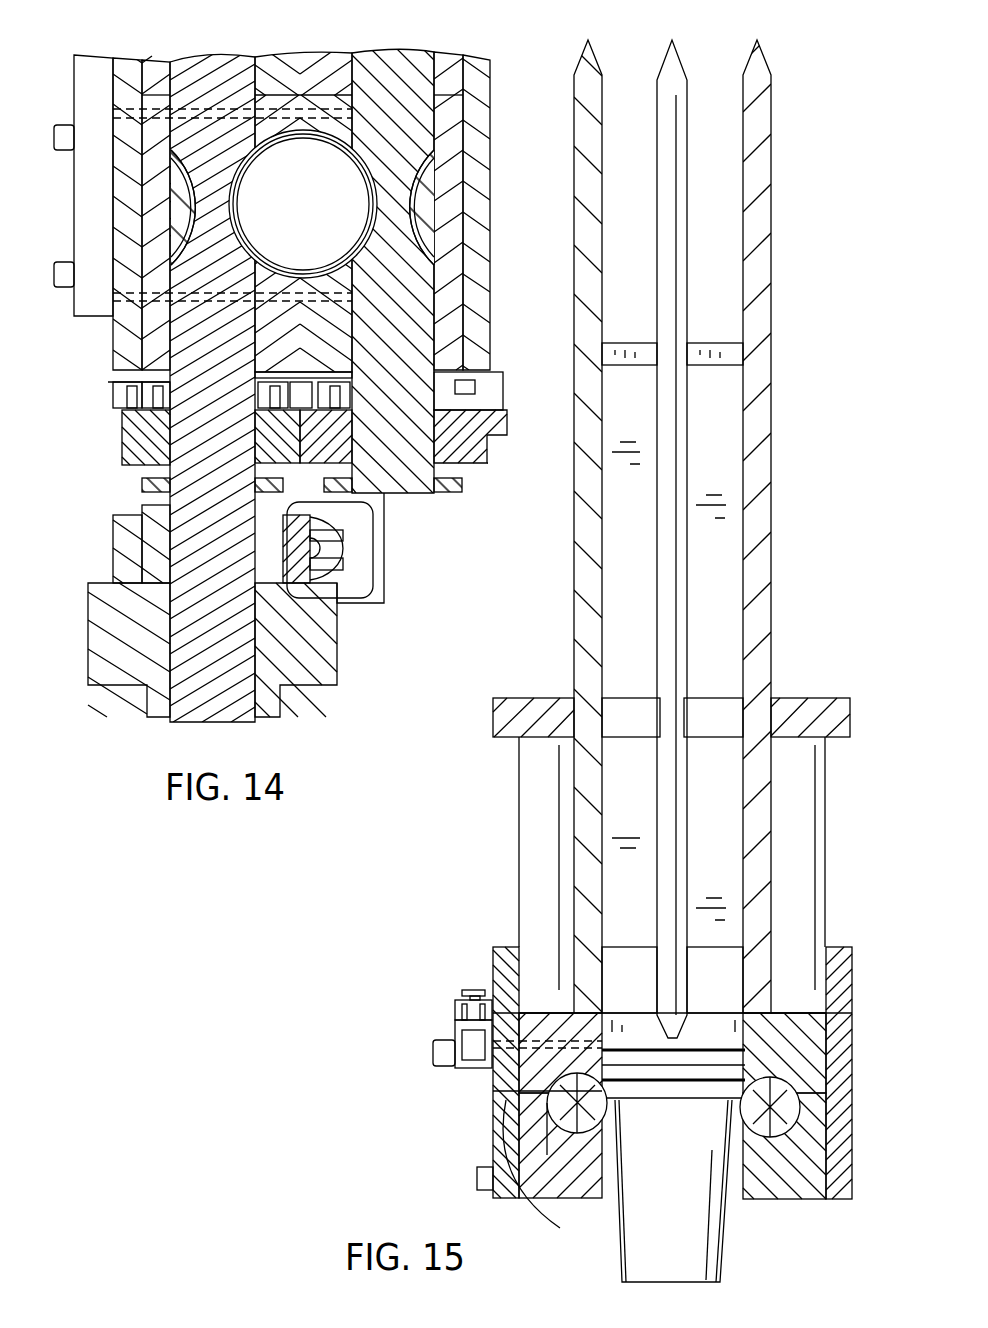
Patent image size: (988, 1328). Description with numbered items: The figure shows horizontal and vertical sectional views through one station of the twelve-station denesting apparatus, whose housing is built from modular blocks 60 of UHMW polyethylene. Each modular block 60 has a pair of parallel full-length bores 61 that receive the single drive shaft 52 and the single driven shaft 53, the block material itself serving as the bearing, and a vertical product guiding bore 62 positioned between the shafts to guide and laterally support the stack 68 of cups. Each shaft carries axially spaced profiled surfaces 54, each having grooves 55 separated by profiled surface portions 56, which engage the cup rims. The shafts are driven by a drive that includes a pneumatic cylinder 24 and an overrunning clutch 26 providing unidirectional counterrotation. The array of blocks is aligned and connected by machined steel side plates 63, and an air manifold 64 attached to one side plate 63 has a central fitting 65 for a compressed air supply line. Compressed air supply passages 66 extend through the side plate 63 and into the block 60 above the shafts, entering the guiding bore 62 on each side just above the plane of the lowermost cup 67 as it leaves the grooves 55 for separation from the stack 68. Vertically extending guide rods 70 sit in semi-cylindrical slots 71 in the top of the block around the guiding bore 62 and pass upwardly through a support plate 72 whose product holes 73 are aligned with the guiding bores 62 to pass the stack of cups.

In FIG. 14, the pneumatic cylinder 24 is at (380, 563).
In FIG. 14, the overrunning clutch 26 is at (330, 640).
In FIG. 14, the drive shaft 52 is at (182, 724).
In FIG. 15, the drive shaft 52 is at (618, 1200).
In FIG. 14, the driven shaft 53 is at (412, 492).
In FIG. 15, the driven shaft 53 is at (770, 1140).
In FIG. 14, the profiled surfaces 54 is at (430, 200).
In FIG. 15, the profiled surfaces 54 is at (828, 1098).
In FIG. 14, the grooves 55 is at (368, 186).
In FIG. 15, the grooves 55 is at (830, 1072).
In FIG. 15, the profiled surface portions 56 is at (552, 1138).
In FIG. 14, the modular block 60 is at (300, 118).
In FIG. 15, the modular block 60 is at (826, 1050).
In FIG. 14, the bores 61 is at (440, 284).
In FIG. 15, the bores 61 is at (493, 1092).
In FIG. 14, the product guiding bore 62 is at (272, 140).
In FIG. 15, the product guiding bore 62 is at (600, 1172).
In FIG. 14, the side plates 63 is at (478, 103).
In FIG. 15, the side plates 63 is at (503, 1008).
In FIG. 14, the air manifold 64 is at (85, 214).
In FIG. 15, the air manifold 64 is at (455, 1060).
In FIG. 15, the central fitting 65 is at (462, 992).
In FIG. 14, the compressed air supply passages 66 is at (212, 104).
In FIG. 15, the lowermost cup 67 is at (672, 1265).
In FIG. 15, the stack 68 is at (695, 1055).
In FIG. 15, the guide rods 70 is at (668, 426).
In FIG. 15, the semi-cylindrical slots 71 is at (535, 1012).
In FIG. 15, the support plate 72 is at (800, 706).
In FIG. 15, the product holes 73 is at (703, 710).